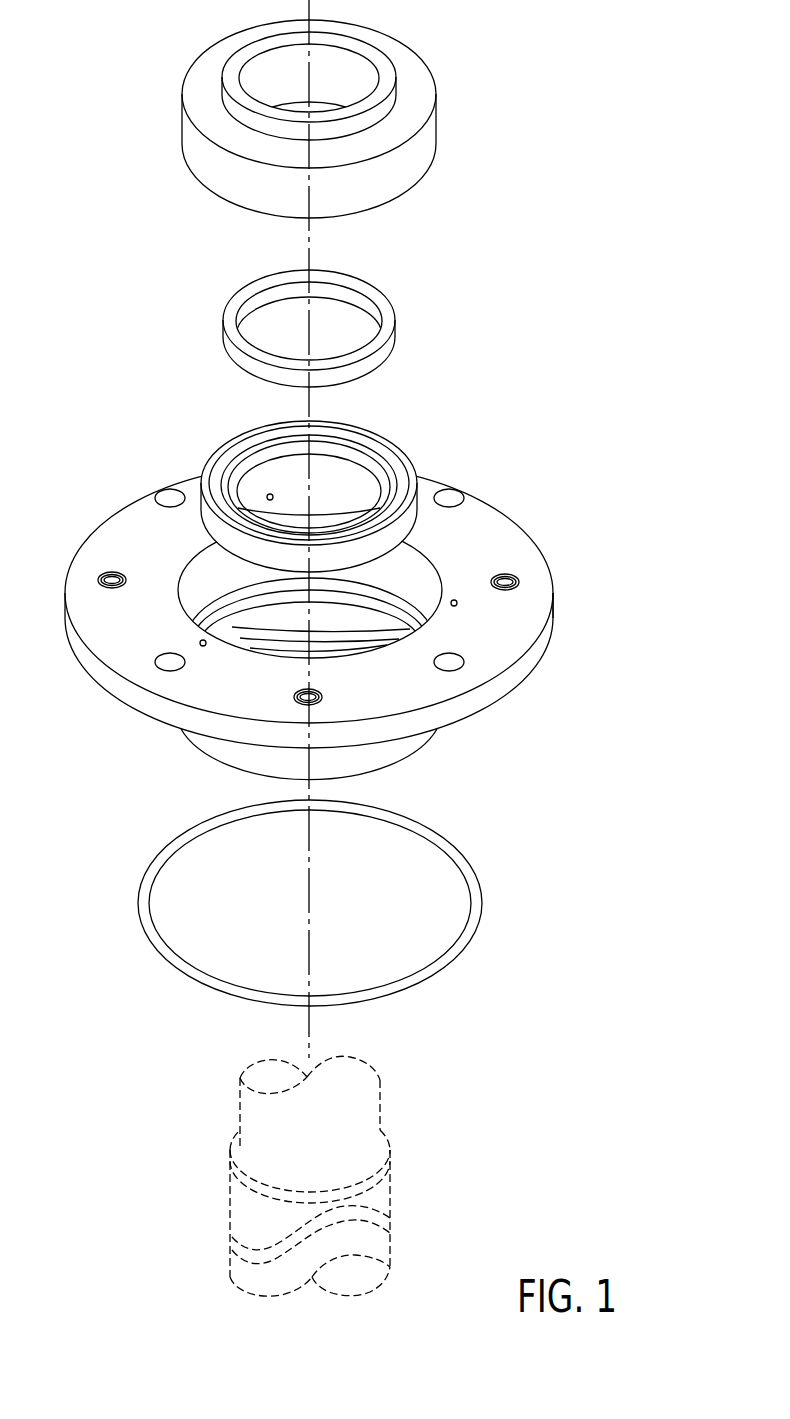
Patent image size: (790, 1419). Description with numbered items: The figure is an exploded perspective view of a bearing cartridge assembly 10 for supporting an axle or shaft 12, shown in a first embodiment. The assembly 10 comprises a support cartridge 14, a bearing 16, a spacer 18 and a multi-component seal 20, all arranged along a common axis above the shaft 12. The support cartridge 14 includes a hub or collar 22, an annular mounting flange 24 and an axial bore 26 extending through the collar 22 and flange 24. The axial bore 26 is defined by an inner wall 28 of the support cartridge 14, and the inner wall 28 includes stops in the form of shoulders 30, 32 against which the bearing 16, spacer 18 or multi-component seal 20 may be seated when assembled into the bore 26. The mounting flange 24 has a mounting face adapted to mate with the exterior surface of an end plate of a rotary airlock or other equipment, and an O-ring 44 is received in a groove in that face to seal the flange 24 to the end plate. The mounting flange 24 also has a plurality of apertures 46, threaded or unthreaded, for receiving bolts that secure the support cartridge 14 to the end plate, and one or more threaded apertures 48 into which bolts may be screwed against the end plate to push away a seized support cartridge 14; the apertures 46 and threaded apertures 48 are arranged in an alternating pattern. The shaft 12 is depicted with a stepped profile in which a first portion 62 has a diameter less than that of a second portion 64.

The bearing cartridge assembly 10 is at (624, 201).
The shaft 12 is at (333, 1162).
The support cartridge 14 is at (562, 539).
The bearing 16 is at (454, 102).
The spacer 18 is at (405, 297).
The multi-component seal 20 is at (400, 434).
The collar 22 is at (390, 757).
The annular mounting flange 24 is at (553, 598).
The axial bore 26 is at (256, 618).
The inner wall 28 is at (208, 558).
The shoulder 30 is at (372, 641).
The shoulder 32 is at (381, 600).
The O-ring 44 is at (460, 834).
The apertures 46 is at (170, 497).
The threaded apertures 48 is at (108, 572).
The first portion 62 is at (252, 1122).
The second portion 64 is at (238, 1210).